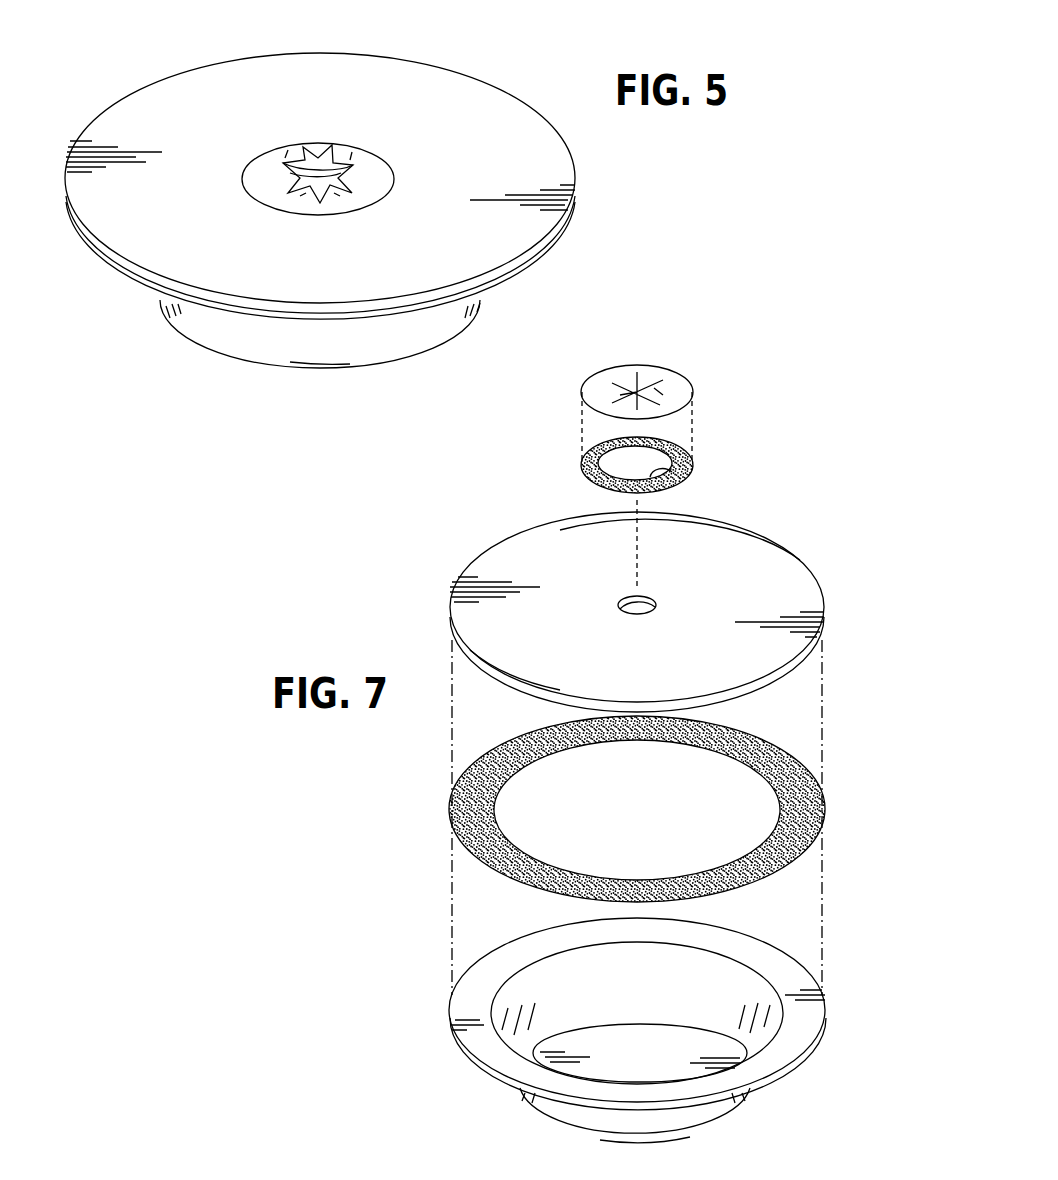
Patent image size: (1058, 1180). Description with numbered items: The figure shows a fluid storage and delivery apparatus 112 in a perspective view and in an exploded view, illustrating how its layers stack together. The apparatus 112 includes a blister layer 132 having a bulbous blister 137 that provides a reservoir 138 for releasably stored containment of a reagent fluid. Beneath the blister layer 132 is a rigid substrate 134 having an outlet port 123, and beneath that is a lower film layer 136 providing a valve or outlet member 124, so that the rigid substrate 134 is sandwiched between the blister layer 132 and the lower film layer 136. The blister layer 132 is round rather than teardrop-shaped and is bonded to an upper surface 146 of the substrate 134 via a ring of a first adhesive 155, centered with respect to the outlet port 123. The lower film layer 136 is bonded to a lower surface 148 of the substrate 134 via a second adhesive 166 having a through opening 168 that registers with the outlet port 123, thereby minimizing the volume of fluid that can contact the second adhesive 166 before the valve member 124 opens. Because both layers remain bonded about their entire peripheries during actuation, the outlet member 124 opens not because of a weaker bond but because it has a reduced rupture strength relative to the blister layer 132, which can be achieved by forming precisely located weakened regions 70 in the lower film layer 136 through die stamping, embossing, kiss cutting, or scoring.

In FIG. 5, the apparatus 112 is at (491, 57).
In FIG. 5, the outlet member 124 is at (318, 160).
In FIG. 7, the outlet member 124 is at (637, 391).
In FIG. 5, the lower film layer 136 is at (383, 166).
In FIG. 7, the lower film layer 136 is at (688, 386).
In FIG. 5, the rigid substrate 134 is at (568, 170).
In FIG. 7, the rigid substrate 134 is at (818, 608).
In FIG. 5, the blister layer 132 is at (467, 320).
In FIG. 7, the blister layer 132 is at (812, 1054).
In FIG. 5, the bulbous blister 137 is at (327, 367).
In FIG. 7, the bulbous blister 137 is at (710, 1128).
In FIG. 7, the weakened regions 70 is at (614, 395).
In FIG. 7, the second adhesive 166 is at (582, 466).
In FIG. 7, the through opening 168 is at (680, 472).
In FIG. 7, the outlet port 123 is at (640, 600).
In FIG. 7, the lower surface 148 is at (805, 582).
In FIG. 7, the upper surface 146 is at (507, 685).
In FIG. 7, the first adhesive 155 is at (448, 812).
In FIG. 7, the reservoir 138 is at (542, 1028).